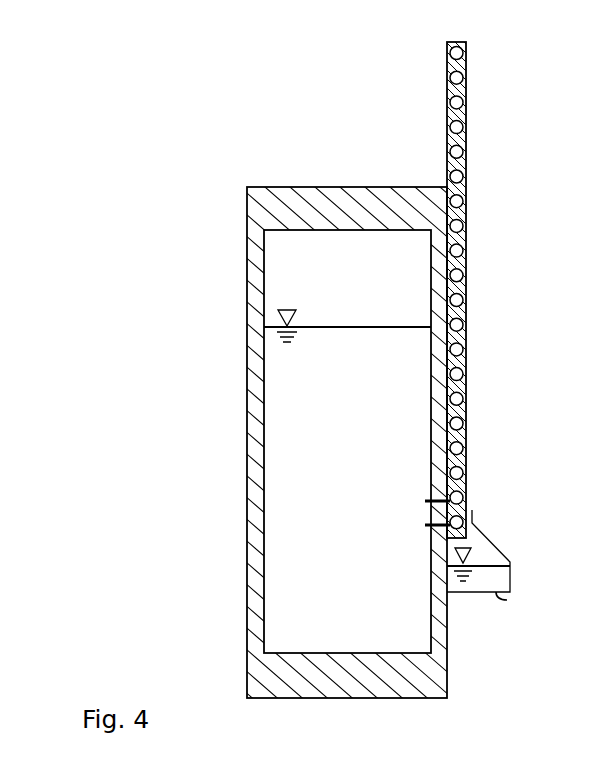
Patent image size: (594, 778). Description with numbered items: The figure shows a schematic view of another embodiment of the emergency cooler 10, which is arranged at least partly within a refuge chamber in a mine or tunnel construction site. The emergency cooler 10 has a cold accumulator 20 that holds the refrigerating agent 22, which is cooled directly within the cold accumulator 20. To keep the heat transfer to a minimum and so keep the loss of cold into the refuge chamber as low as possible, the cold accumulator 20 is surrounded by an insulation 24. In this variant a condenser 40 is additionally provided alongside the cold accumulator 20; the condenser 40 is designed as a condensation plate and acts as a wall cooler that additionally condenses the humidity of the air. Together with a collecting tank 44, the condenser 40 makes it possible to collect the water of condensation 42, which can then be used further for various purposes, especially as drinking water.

The emergency cooler 10 is at (96, 283).
The cold accumulator 20 is at (211, 365).
The refrigerating agent 22 is at (288, 408).
The insulation 24 is at (253, 473).
The condenser 40 is at (476, 366).
The water of condensation 42 is at (503, 579).
The collecting tank 44 is at (507, 600).